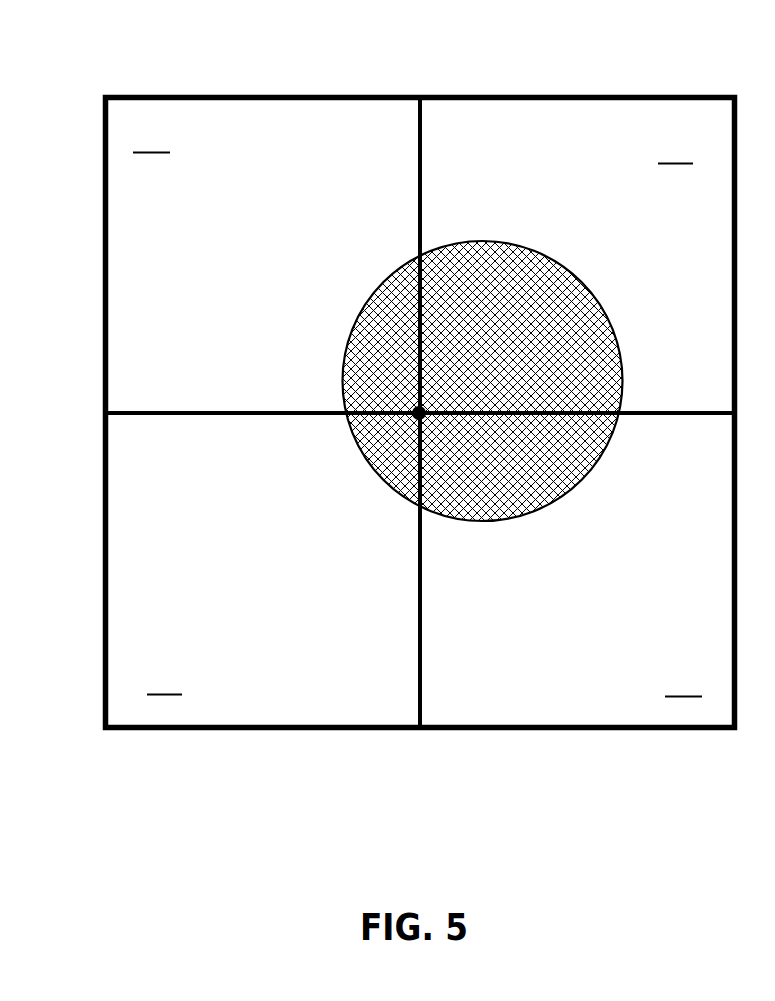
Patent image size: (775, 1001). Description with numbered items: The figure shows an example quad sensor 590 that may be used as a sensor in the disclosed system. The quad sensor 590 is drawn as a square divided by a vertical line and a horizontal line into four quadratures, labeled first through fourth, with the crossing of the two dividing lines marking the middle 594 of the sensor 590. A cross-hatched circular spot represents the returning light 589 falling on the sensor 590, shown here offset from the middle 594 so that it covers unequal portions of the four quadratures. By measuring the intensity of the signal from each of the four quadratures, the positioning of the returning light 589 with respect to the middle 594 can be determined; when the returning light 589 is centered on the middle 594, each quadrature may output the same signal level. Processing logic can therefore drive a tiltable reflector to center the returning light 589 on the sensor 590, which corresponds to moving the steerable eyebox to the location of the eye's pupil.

The quad sensor 590 is at (104, 96).
The returning light 589 is at (376, 290).
The middle 594 is at (414, 417).